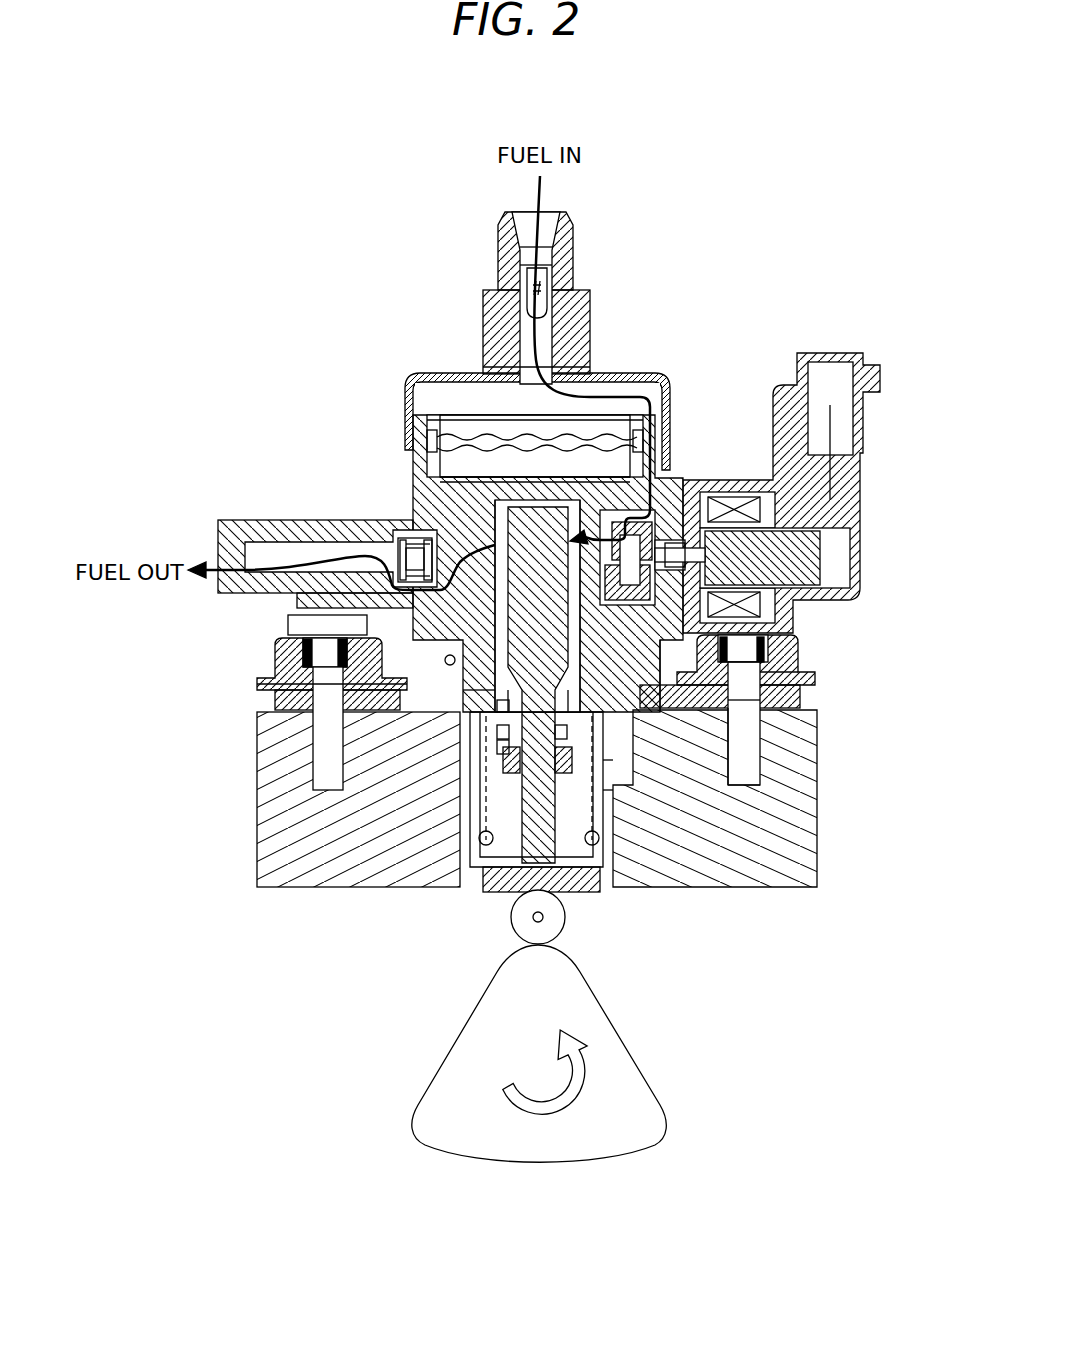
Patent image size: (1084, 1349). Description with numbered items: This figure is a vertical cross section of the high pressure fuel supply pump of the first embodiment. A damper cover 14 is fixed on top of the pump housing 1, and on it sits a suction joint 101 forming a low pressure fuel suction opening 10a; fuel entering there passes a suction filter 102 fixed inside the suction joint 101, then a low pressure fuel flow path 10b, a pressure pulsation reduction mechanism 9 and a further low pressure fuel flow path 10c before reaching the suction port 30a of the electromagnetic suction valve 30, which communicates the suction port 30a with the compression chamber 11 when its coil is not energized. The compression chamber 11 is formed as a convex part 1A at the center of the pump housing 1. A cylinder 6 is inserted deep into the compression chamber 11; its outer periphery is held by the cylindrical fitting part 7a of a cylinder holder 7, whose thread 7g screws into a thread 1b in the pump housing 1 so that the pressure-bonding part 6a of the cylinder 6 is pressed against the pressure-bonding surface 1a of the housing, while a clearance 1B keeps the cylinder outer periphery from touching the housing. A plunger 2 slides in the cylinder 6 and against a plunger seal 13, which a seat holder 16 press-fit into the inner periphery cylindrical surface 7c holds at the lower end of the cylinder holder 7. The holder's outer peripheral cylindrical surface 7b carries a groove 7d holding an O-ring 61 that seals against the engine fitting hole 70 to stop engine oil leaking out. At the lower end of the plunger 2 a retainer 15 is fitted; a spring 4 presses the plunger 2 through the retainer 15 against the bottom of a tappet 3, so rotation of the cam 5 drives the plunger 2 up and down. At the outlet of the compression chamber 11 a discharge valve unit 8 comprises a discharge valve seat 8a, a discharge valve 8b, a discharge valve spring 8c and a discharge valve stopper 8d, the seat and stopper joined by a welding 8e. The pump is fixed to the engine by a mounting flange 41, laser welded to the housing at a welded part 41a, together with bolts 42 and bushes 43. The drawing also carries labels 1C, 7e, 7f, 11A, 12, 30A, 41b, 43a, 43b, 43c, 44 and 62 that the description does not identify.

The pump housing 1 is at (412, 435).
The convex part 1A is at (465, 447).
The clearance 1B is at (572, 594).
The damper cover 1C is at (408, 396).
The pressure-bonding surface 1a is at (705, 768).
The thread 1b is at (520, 690).
The plunger 2 is at (515, 862).
The tappet 3 is at (573, 873).
The spring 4 is at (600, 850).
The cam 5 is at (620, 1105).
The cylinder 6 is at (700, 755).
The pressure-bonding part 6a is at (745, 745).
The cylinder holder 7 is at (610, 740).
The cylindrical fitting part 7a is at (470, 645).
The outer peripheral cylindrical surface 7b is at (490, 758).
The inner periphery cylindrical surface 7c is at (500, 720).
The groove 7d is at (505, 745).
The cylinder bottom 7e is at (665, 785).
The cylinder flange 7f is at (475, 712).
The thread 7g is at (460, 650).
The discharge valve unit 8 is at (378, 452).
The discharge valve seat 8a is at (440, 552).
The discharge valve 8b is at (410, 558).
The discharge valve spring 8c is at (402, 553).
The discharge valve stopper 8d is at (395, 548).
The welding 8e is at (420, 556).
The pressure pulsation reduction mechanism 9 is at (505, 478).
The low pressure fuel suction opening 10a is at (522, 228).
The low pressure fuel flow path 10b is at (572, 382).
The low pressure fuel flow path 10c is at (640, 395).
The compression chamber 11 is at (468, 478).
The cylinder holder 11A is at (327, 625).
The discharge joint 12 is at (270, 552).
The plunger seal 13 is at (515, 790).
The damper cover 14 is at (432, 432).
The retainer 15 is at (572, 888).
The seat holder 16 is at (505, 775).
The electromagnetic suction valve 30 is at (773, 478).
The suction valve 30A is at (620, 528).
The suction port 30a is at (668, 532).
The mounting flange 41 is at (762, 716).
The welded part 41a is at (744, 785).
The bolt shank 41b is at (765, 735).
The bolts 42 is at (758, 632).
The bushes 43 is at (757, 668).
The flange lower surface 43a is at (765, 694).
The flange bolt hole 43b is at (768, 712).
The flange upper surface 43c is at (770, 655).
The bolt head 44 is at (748, 650).
The O-ring 61 is at (455, 760).
The retainer 62 is at (460, 700).
The fitting hole 70 is at (640, 770).
The suction joint 101 is at (580, 332).
The suction filter 102 is at (555, 290).